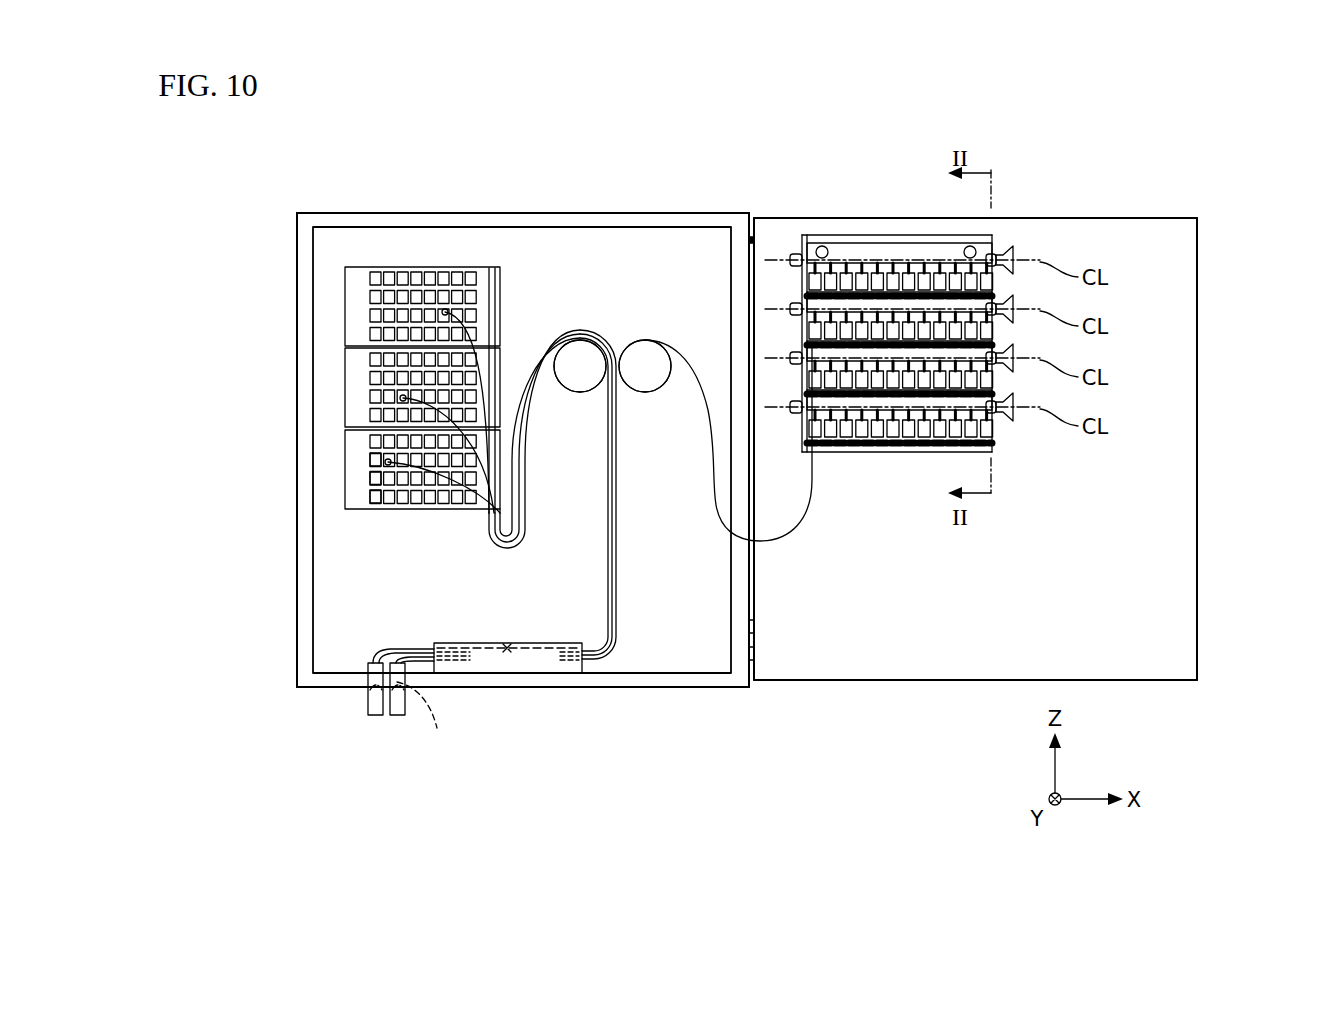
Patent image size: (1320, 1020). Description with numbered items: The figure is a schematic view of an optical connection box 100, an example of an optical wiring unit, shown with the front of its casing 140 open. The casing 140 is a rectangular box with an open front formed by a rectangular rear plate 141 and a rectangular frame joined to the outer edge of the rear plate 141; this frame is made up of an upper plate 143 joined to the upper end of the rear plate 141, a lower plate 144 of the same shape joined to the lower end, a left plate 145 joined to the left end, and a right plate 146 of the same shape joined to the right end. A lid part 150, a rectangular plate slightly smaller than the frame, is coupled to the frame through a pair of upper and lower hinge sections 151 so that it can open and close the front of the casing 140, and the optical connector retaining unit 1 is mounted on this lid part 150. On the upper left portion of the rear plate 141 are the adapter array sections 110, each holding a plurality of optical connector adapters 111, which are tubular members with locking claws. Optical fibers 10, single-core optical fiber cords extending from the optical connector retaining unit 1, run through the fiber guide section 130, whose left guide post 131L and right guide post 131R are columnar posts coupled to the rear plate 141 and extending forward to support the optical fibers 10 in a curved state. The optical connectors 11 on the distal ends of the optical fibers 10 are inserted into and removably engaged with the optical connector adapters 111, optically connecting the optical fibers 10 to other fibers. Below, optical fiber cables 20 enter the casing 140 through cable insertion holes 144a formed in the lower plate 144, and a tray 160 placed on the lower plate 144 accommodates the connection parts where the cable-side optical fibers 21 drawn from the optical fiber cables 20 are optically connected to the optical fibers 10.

The optical connection box 100 is at (1152, 160).
The casing 140 is at (286, 228).
The rear plate 141 is at (328, 572).
The upper plate 143 is at (453, 220).
The lower plate 144 is at (618, 676).
The cable insertion hole 144a is at (430, 723).
The left plate 145 is at (300, 275).
The right plate 146 is at (738, 610).
The lid part 150 is at (1200, 291).
The hinge section 151 is at (755, 250).
The adapter array section 110 is at (332, 438).
The optical connector adapter 111 is at (372, 460).
The optical connector 11 is at (387, 460).
The optical fiber 10 is at (608, 622).
The fiber guide section 130 is at (581, 405).
The left guide post 131L is at (583, 352).
The right guide post 131R is at (645, 355).
The tray 160 is at (507, 668).
The cable-side optical fiber 21 is at (396, 650).
The optical fiber cable 20 is at (390, 700).
The optical connector retaining unit 1 is at (1030, 240).